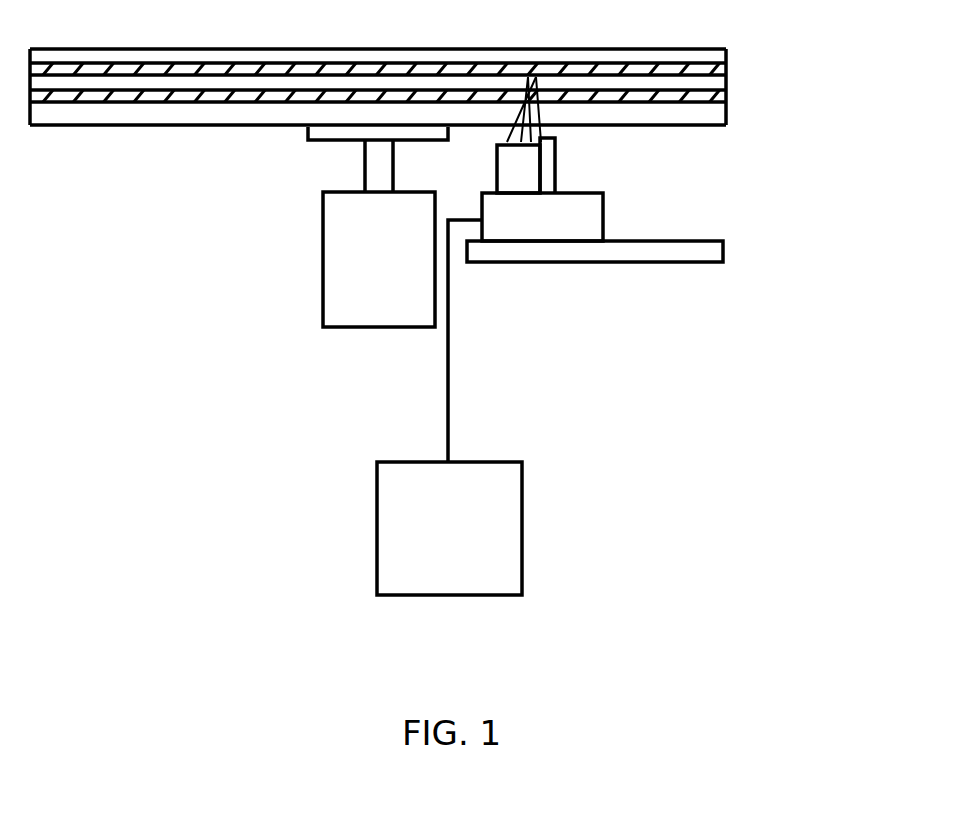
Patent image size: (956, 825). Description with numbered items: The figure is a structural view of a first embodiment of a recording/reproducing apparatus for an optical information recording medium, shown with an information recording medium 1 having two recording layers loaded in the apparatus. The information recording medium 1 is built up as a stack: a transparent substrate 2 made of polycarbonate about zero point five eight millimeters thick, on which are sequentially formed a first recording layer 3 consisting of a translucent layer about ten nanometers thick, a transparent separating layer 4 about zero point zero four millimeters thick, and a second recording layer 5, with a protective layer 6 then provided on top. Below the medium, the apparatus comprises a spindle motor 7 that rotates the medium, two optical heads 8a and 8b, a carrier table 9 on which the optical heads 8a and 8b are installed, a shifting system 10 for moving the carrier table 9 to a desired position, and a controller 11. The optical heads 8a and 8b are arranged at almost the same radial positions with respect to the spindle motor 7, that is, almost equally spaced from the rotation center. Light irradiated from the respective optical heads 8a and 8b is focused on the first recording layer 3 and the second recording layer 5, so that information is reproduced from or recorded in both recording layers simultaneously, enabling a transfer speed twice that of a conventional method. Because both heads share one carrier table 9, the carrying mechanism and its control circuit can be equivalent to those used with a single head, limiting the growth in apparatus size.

The information recording medium 1 is at (462, 87).
The transparent substrate 2 is at (427, 112).
The first recording layer 3 is at (727, 98).
The transparent separating layer 4 is at (727, 85).
The second recording layer 5 is at (727, 72).
The protective layer 6 is at (727, 58).
The spindle motor 7 is at (343, 327).
The optical head 8a is at (497, 170).
The optical head 8b is at (555, 173).
The carrier table 9 is at (603, 220).
The shifting system 10 is at (723, 250).
The controller 11 is at (522, 528).